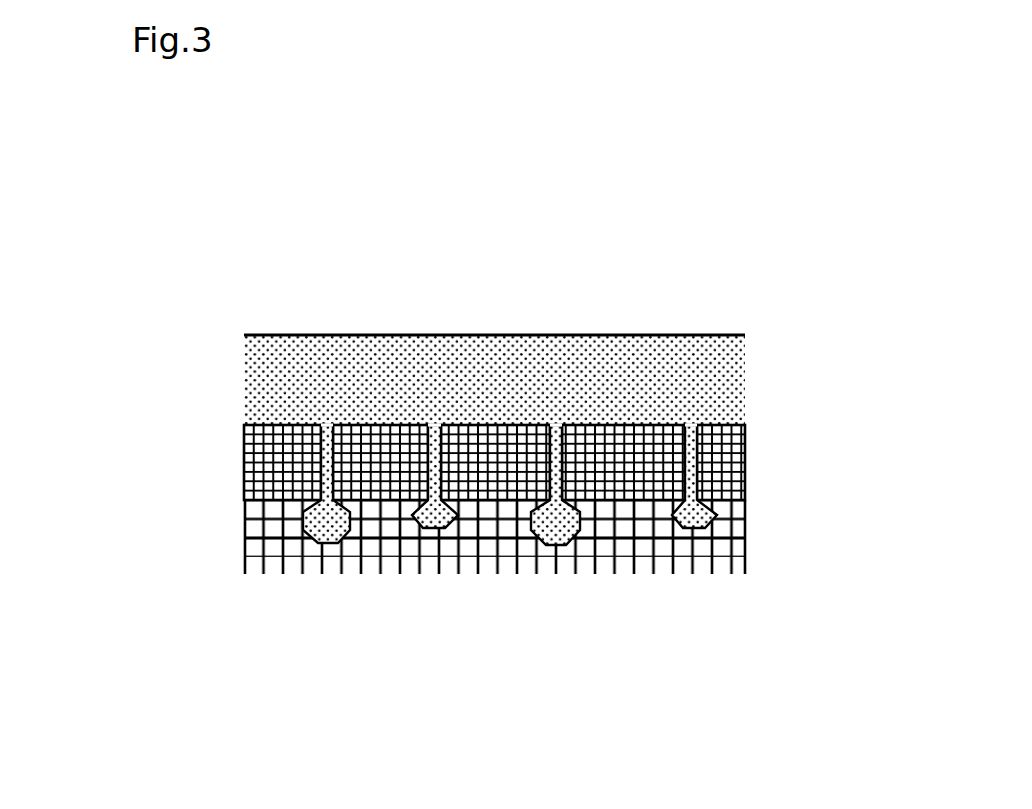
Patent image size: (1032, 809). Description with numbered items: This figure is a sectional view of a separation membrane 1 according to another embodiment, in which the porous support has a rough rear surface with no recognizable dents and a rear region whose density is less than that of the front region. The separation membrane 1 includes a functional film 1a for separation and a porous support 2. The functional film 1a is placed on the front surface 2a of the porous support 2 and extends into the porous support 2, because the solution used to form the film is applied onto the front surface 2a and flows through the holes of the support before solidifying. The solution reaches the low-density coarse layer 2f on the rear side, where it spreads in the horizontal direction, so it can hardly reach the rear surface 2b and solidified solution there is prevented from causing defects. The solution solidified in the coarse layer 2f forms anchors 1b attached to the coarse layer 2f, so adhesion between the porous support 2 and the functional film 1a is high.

The separation membrane 1 is at (421, 417).
The functional film 1a is at (297, 360).
The anchors 1b is at (305, 520).
The porous support 2 is at (469, 477).
The front surface 2a is at (718, 424).
The rear surface 2b is at (533, 577).
The coarse layer 2f is at (718, 553).